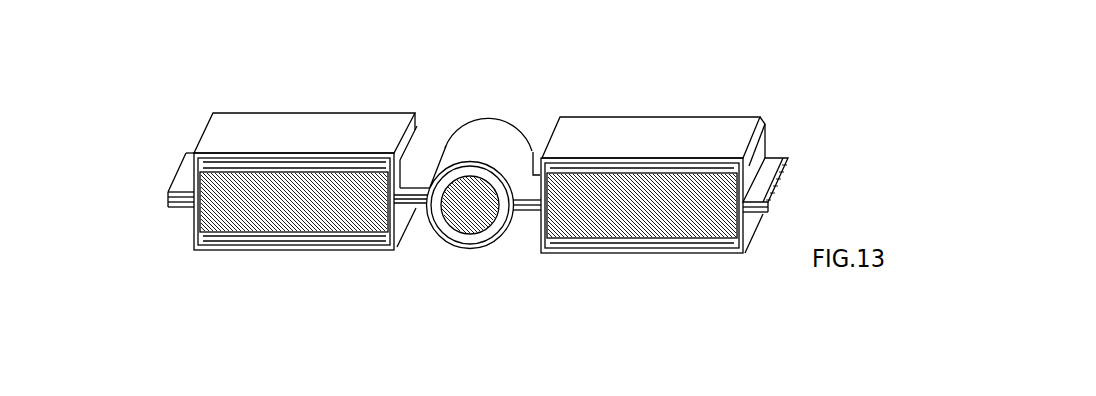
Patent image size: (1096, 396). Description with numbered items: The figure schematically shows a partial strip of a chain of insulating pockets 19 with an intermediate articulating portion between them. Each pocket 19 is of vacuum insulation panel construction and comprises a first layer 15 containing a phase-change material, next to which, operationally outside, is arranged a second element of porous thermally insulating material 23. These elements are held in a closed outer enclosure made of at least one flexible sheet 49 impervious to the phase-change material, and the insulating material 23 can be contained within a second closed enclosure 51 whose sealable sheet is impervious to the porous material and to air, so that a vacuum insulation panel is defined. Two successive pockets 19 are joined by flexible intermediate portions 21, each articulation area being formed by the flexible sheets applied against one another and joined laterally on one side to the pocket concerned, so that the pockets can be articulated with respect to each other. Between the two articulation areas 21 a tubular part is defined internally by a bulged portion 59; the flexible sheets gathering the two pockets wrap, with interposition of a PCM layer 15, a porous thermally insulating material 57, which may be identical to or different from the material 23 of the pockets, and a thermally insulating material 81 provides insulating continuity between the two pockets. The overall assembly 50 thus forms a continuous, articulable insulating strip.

The layer containing a PCM 15 is at (353, 163).
The insulating pocket 19 is at (509, 154).
The flexible intermediate portion 21 is at (423, 168).
The thermally insulating material 23 is at (682, 232).
The flexible sheet 49 is at (227, 125).
The cell assembly 50 is at (486, 180).
The second closed enclosure 51 is at (218, 167).
The porous thermally insulating material 57 is at (478, 231).
The bulged portion 59 is at (452, 242).
The thermally insulating material 81 is at (508, 180).